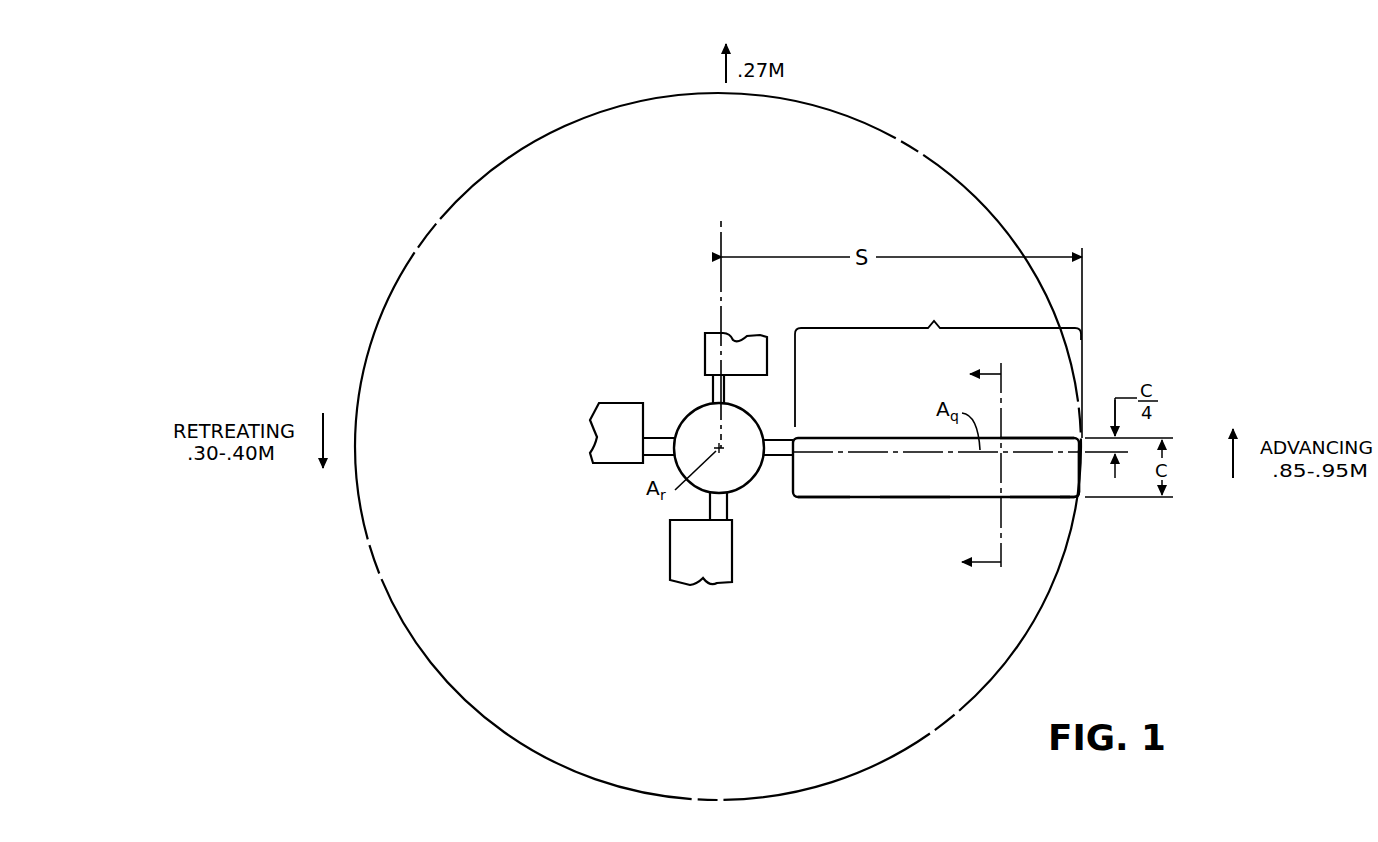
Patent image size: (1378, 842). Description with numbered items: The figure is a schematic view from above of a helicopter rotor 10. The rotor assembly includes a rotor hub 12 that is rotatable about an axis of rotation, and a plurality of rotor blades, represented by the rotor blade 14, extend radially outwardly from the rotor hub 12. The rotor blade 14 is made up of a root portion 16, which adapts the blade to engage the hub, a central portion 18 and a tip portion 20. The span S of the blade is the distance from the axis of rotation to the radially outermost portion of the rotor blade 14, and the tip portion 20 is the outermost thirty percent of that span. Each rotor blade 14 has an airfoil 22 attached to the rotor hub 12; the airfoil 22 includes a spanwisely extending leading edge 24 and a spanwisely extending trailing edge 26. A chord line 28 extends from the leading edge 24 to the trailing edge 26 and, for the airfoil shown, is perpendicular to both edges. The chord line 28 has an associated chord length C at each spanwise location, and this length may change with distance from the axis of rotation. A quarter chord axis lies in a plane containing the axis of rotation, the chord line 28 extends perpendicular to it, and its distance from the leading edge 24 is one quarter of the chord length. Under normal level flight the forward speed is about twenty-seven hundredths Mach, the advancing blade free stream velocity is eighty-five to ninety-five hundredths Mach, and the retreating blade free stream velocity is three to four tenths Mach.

The helicopter rotor 10 is at (1143, 345).
The rotor hub 12 is at (695, 410).
The rotor blade 14 is at (898, 431).
The root portion 16 is at (828, 473).
The central portion 18 is at (937, 473).
The tip portion 20 is at (1042, 473).
The airfoil 22 is at (938, 363).
The leading edge 24 is at (1048, 436).
The trailing edge 26 is at (1055, 498).
The chord line 28 is at (998, 480).